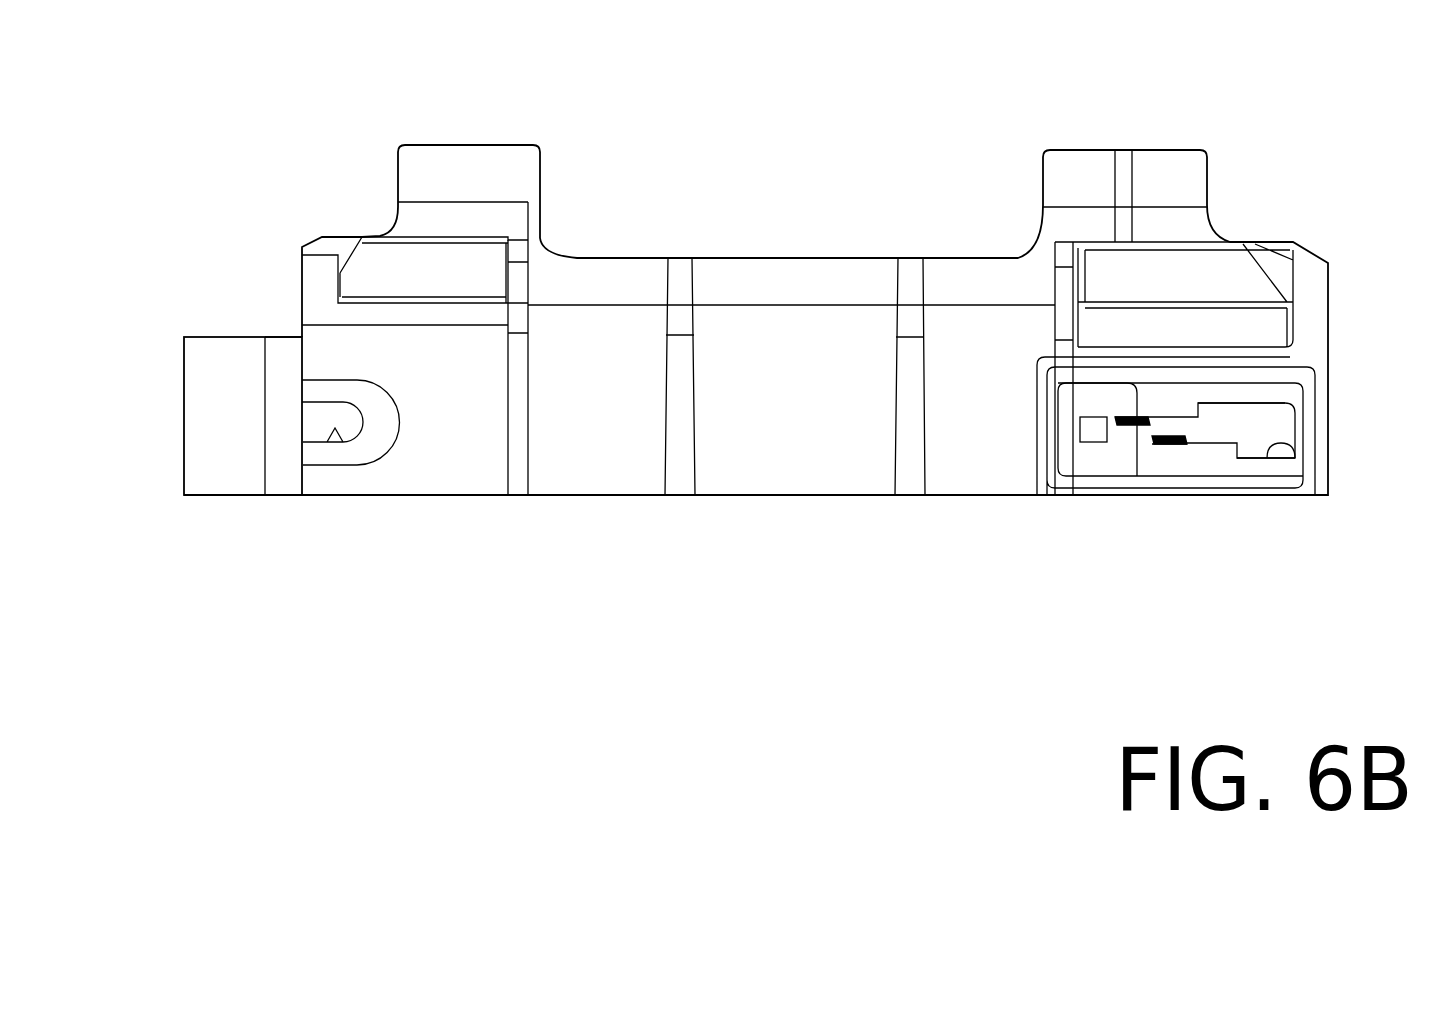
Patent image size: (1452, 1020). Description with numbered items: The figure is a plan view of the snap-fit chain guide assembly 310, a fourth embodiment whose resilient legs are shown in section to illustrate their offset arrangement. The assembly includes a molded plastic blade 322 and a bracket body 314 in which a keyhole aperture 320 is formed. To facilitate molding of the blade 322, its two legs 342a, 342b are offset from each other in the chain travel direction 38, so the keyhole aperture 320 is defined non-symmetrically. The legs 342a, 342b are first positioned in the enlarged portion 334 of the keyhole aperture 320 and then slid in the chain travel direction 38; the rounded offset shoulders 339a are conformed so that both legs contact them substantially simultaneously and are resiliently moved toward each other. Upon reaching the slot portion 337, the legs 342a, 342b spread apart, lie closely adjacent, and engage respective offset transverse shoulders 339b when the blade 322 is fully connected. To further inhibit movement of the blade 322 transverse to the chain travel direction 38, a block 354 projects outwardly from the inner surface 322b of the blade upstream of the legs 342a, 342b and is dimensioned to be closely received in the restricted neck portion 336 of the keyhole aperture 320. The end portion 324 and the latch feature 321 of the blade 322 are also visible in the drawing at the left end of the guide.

The chain guide assembly 310 is at (805, 207).
The housing body 314 is at (747, 453).
The keyhole aperture 320 is at (1073, 454).
The latch tooth 321 is at (352, 442).
The plastic blade 322 is at (283, 497).
The inner surface 322b is at (283, 358).
The end block 324 is at (227, 372).
The enlarged portion 334 is at (1097, 425).
The restricted neck portion 336 is at (1180, 415).
The slot portion 337 is at (1290, 447).
The chain travel direction 38 is at (908, 556).
The offset shoulders 339a is at (1140, 417).
The offset transverse shoulders 339b is at (1172, 420).
The leg 342a is at (1137, 427).
The leg 342b is at (1177, 447).
The block 354 is at (1072, 407).